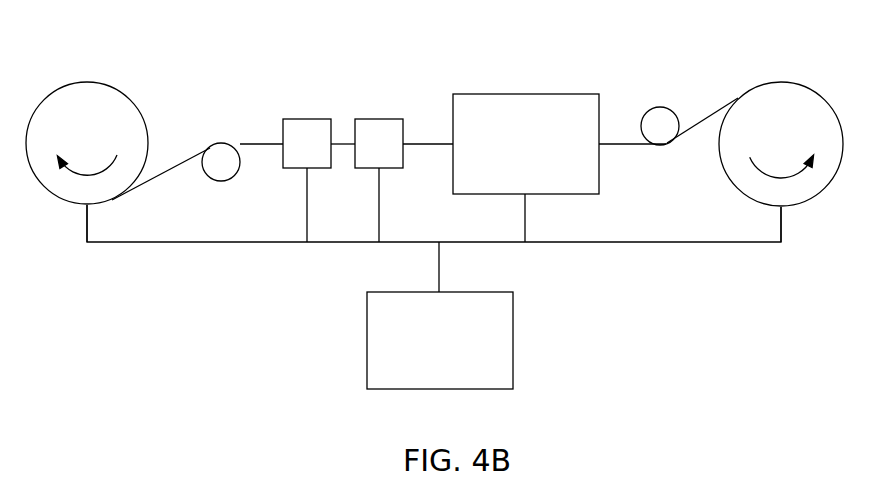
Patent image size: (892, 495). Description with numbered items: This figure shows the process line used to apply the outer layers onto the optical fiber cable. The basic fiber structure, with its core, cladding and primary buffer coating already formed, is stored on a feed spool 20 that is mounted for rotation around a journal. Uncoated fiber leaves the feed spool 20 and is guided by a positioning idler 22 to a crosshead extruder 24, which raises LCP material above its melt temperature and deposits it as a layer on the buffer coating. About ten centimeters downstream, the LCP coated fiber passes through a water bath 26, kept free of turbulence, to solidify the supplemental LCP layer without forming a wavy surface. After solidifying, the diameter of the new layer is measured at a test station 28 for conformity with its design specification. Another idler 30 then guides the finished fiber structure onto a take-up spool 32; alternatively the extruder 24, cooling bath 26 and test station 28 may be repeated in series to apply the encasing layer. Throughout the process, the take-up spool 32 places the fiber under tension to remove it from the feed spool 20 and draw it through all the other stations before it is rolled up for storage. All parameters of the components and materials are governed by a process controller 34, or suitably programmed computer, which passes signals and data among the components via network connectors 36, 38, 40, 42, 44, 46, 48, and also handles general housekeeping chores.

The feed spool 20 is at (795, 132).
The positioning idler 22 is at (658, 122).
The crosshead extruder 24 is at (513, 107).
The water bath 26 is at (380, 132).
The test station 28 is at (307, 132).
The idler 30 is at (218, 160).
The take-up spool 32 is at (100, 130).
The process controller 34 is at (513, 342).
The network connector 36 is at (677, 243).
The network connector 38 is at (525, 218).
The network connector 40 is at (380, 217).
The network connector 42 is at (307, 205).
The network connector 44 is at (84, 230).
The network connector 46 is at (232, 243).
The network connector 48 is at (440, 268).